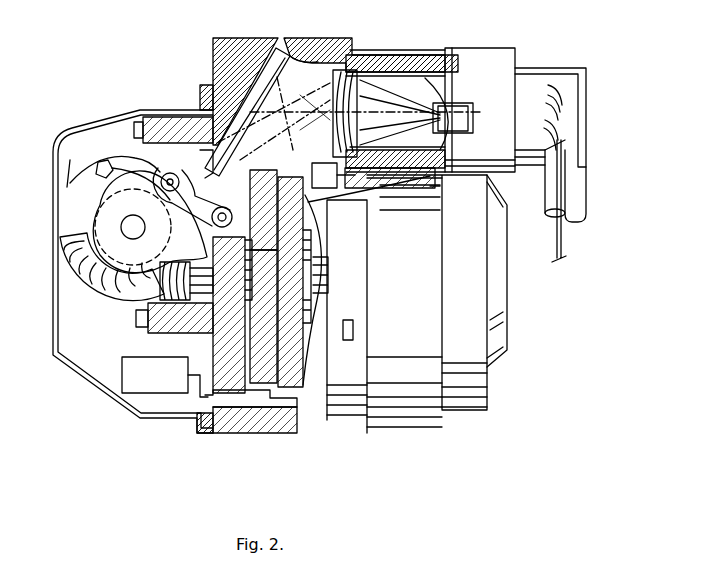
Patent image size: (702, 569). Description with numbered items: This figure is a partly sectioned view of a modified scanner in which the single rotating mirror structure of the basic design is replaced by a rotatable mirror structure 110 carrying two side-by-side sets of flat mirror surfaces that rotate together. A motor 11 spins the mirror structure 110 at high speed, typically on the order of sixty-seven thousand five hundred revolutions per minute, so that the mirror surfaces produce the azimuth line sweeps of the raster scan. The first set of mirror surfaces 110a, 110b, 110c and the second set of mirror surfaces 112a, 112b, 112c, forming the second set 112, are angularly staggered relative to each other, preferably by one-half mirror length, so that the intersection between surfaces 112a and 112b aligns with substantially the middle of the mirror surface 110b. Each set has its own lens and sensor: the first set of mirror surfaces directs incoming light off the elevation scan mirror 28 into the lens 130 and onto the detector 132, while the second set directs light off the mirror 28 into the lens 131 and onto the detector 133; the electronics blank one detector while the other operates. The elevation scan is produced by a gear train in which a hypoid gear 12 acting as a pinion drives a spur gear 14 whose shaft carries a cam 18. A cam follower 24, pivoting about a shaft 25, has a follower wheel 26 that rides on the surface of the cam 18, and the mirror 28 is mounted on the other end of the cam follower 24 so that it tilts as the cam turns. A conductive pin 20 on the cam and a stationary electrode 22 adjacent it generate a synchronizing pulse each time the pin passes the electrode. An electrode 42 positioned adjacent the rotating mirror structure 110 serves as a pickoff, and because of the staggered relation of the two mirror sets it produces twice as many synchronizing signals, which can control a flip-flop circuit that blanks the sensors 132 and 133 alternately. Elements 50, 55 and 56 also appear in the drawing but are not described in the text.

The motor 11 is at (502, 318).
The hypoid gear 12 is at (128, 296).
The spur gear 14 is at (92, 295).
The cam 18 is at (95, 186).
The conductive pin 20 is at (101, 209).
The stationary electrode 22 is at (100, 165).
The cam follower 24 is at (205, 168).
The shaft 25 is at (212, 222).
The follower wheel 26 is at (165, 170).
The elevation scan mirror 28 is at (274, 48).
The electrode 42 is at (284, 402).
The power cable 50 is at (572, 146).
The control component 55 is at (122, 372).
The housing 56 is at (117, 402).
The rotatable mirror structure 110 is at (328, 214).
The mirror surface 110a is at (312, 204).
The mirror surface 110b is at (297, 278).
The mirror surface 110c is at (293, 334).
The second set of mirror surfaces 112 is at (272, 166).
The mirror surface 112a is at (266, 204).
The mirror surface 112b is at (262, 264).
The mirror surface 112c is at (262, 362).
The lens 130 is at (360, 82).
The lens 131 is at (405, 62).
The detector 132 is at (420, 86).
The detector 133 is at (470, 136).